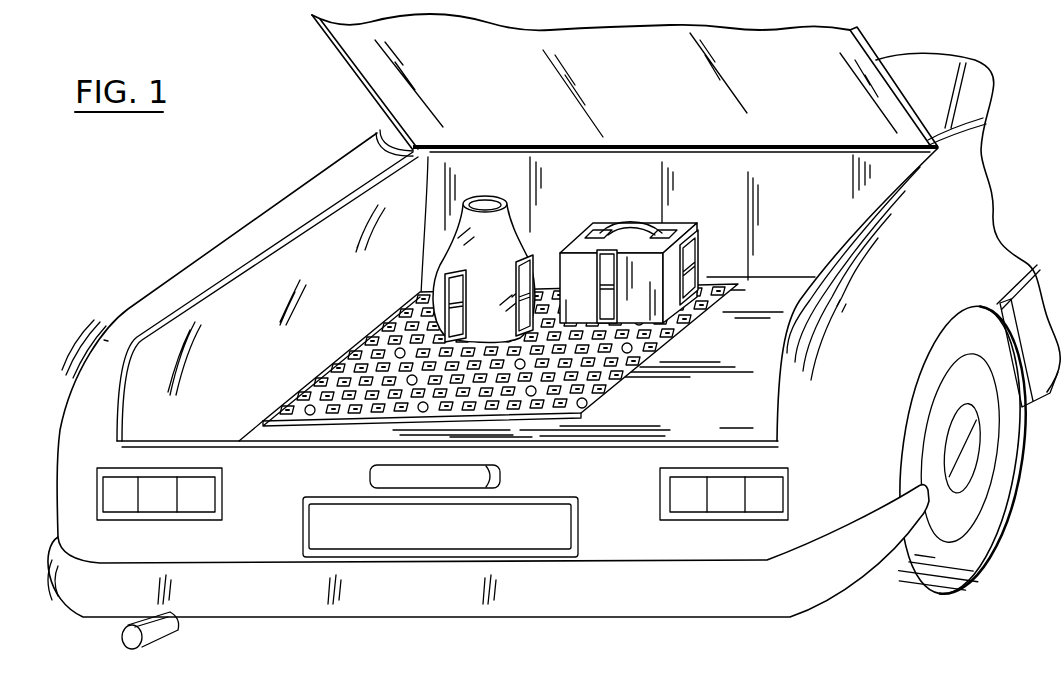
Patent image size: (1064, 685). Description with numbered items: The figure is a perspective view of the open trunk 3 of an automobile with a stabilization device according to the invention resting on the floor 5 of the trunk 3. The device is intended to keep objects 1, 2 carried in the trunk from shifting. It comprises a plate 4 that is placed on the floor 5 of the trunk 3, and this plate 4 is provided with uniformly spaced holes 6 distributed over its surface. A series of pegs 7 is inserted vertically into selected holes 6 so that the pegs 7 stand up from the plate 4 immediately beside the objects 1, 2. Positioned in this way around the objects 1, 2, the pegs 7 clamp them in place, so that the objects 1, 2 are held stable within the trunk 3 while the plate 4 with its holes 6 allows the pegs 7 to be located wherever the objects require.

The object 1 is at (483, 233).
The object 2 is at (633, 235).
The trunk 3 is at (825, 222).
The plate 4 is at (647, 370).
The floor 5 is at (640, 405).
The holes 6 is at (393, 398).
The pegs 7 is at (443, 287).